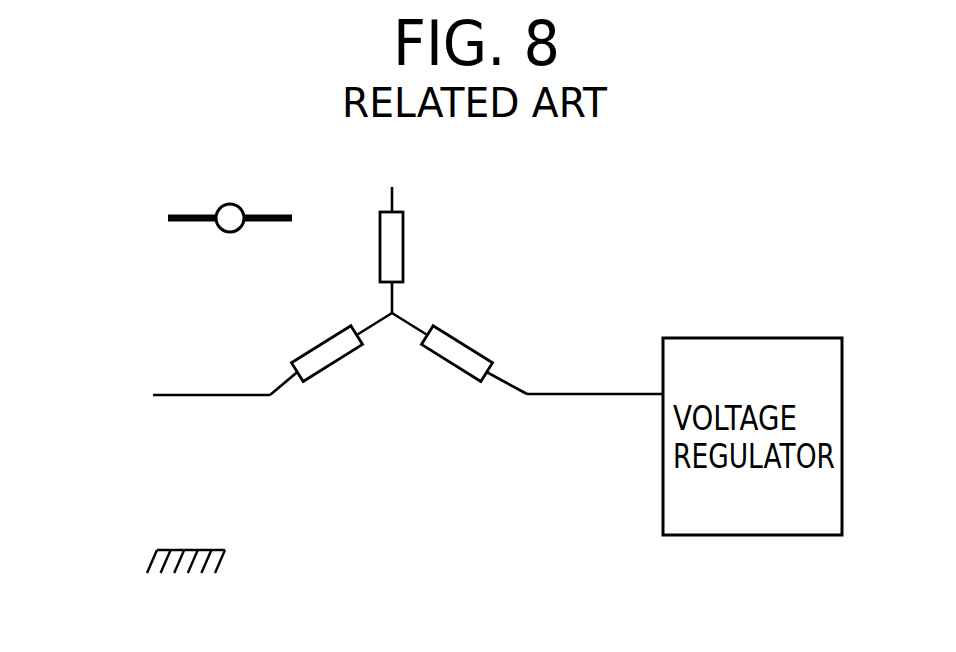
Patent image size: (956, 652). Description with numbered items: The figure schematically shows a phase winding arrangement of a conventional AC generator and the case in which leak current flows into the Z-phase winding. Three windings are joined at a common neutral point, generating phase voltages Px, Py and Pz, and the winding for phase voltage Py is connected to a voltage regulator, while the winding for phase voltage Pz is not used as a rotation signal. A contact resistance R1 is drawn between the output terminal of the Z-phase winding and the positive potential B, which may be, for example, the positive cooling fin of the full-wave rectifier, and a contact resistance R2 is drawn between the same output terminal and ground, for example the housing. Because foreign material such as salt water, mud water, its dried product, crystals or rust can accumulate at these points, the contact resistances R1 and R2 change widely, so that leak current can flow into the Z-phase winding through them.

The +B potential B is at (197, 209).
The phase voltage Px is at (416, 250).
The phase voltage Py is at (491, 354).
The phase voltage Pz is at (329, 374).
The contact resistance R1 is at (238, 250).
The contact resistance R2 is at (171, 528).